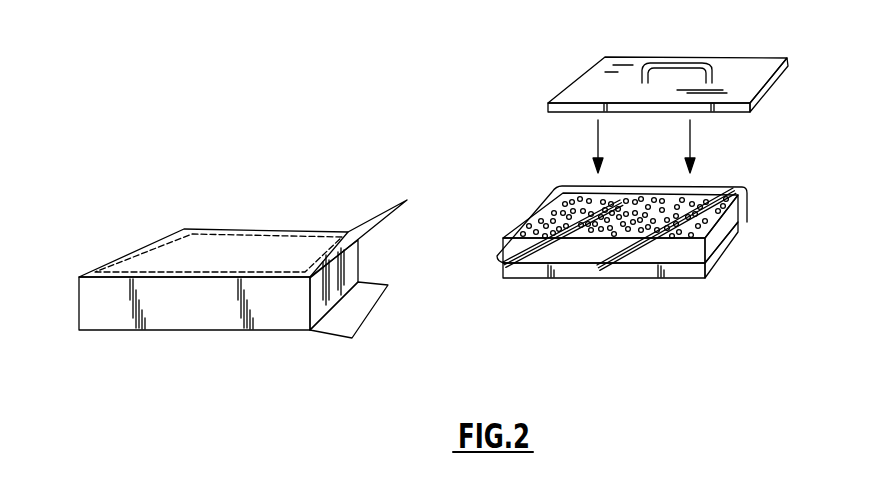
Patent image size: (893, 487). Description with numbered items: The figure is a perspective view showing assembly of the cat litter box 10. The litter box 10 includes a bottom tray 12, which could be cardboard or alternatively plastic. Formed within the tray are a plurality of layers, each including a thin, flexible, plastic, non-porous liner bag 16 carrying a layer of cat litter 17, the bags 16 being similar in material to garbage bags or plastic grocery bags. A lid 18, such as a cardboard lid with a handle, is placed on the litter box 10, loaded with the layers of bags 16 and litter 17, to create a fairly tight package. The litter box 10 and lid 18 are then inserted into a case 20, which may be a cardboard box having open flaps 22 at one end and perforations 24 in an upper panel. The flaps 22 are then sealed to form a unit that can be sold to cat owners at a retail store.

The cat litter box 10 is at (753, 167).
The bottom tray 12 is at (718, 263).
The liner bag 16 is at (745, 212).
The cat litter 17 is at (618, 212).
The lid 18 is at (798, 60).
The case 20 is at (122, 258).
The flaps 22 is at (407, 200).
The perforations 24 is at (188, 229).